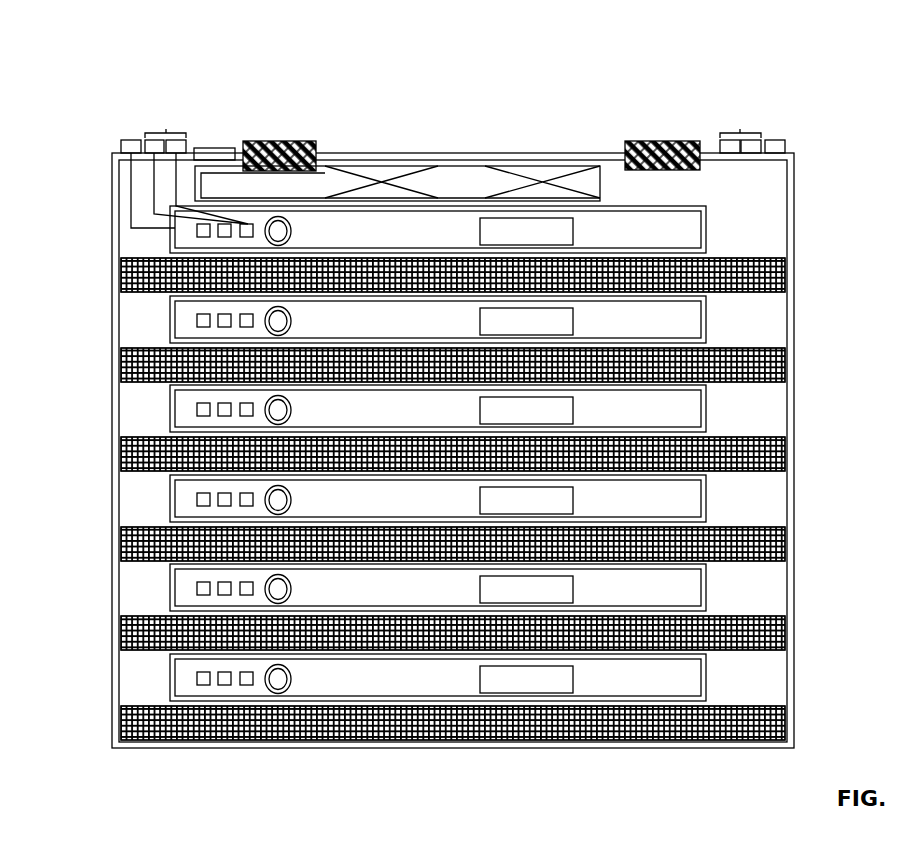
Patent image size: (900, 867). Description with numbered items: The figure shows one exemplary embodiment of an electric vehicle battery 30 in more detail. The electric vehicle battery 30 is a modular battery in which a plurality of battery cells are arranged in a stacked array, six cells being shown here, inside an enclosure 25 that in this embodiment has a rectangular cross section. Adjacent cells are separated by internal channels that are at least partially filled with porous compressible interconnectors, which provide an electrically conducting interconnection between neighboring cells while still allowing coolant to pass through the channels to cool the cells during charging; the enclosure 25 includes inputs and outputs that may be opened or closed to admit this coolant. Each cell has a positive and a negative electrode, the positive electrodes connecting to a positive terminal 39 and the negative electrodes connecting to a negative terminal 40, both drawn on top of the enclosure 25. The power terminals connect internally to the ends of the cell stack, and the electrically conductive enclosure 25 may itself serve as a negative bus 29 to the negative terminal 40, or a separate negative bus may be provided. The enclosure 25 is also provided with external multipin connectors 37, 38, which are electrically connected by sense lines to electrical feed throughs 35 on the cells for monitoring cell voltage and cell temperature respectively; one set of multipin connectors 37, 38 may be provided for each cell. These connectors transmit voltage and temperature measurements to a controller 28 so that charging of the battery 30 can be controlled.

The enclosure 25 is at (104, 683).
The controller 28 is at (657, 197).
The negative bus 29 is at (547, 146).
The electric vehicle battery 30 is at (78, 72).
The electrical feed throughs 35 is at (195, 677).
The multipin connector 37 is at (113, 135).
The multipin connector 38 is at (453, 130).
The positive terminal 39 is at (274, 133).
The negative terminal 40 is at (656, 133).